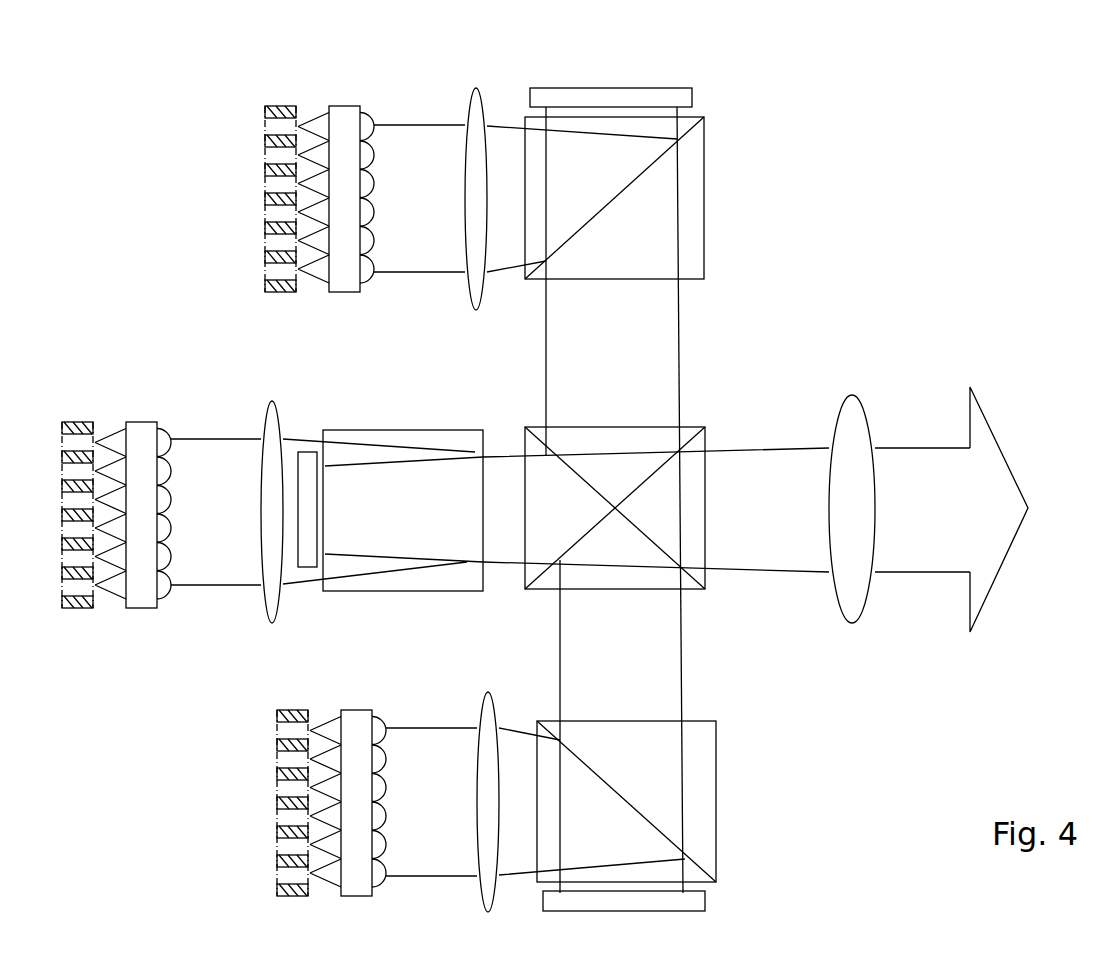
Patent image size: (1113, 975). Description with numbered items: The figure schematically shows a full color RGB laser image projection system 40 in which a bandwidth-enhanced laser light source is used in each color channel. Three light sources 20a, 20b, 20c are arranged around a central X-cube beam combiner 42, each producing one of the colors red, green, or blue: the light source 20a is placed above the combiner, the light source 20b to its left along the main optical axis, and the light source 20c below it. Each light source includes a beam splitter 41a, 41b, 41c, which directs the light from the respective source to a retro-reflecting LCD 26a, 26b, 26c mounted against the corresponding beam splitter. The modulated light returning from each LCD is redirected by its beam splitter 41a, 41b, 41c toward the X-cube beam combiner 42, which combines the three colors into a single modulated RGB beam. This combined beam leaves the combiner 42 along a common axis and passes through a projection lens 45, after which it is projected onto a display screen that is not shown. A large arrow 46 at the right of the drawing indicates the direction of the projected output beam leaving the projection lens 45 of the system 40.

The light source 20a is at (400, 93).
The light source 20b is at (230, 407).
The light source 20c is at (428, 703).
The retro-reflecting LCD 26a is at (610, 88).
The retro-reflecting LCD 26b is at (311, 450).
The retro-reflecting LCD 26c is at (707, 897).
The laser image projection system 40 is at (790, 300).
The beam splitter 41a is at (704, 194).
The beam splitter 41b is at (415, 428).
The beam splitter 41c is at (720, 803).
The X-cube beam combiner 42 is at (705, 589).
The projection lens 45 is at (848, 395).
The output light direction arrow 46 is at (998, 545).